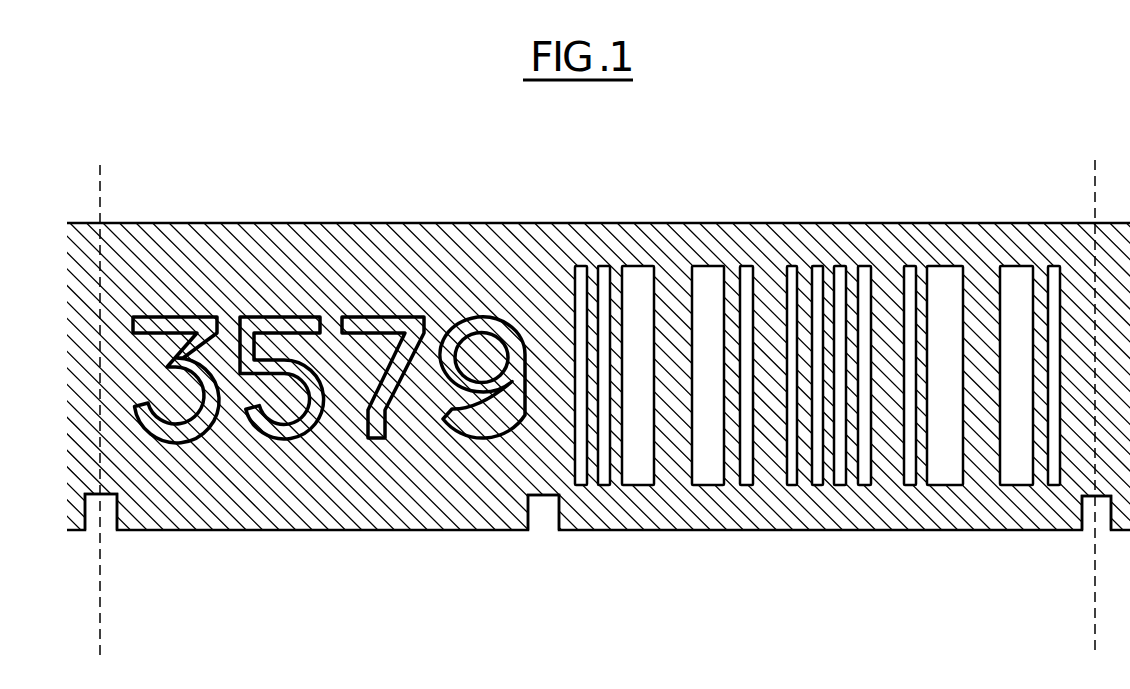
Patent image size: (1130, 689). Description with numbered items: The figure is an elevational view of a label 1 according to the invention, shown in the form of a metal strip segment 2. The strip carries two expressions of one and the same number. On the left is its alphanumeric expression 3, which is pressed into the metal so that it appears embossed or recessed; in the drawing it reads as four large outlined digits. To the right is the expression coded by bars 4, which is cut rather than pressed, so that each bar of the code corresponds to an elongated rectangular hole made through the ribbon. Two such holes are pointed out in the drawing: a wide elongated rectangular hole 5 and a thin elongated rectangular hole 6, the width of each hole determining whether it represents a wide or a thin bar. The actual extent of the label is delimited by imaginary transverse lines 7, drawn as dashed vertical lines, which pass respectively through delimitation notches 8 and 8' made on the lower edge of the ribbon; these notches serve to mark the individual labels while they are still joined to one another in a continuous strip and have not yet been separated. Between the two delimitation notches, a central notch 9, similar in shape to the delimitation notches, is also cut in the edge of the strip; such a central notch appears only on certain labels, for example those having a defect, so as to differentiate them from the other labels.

The label 1 is at (762, 183).
The metal strip segment 2 is at (80, 222).
The alphanumeric expression 3 is at (337, 470).
The expression coded by bars 4 is at (777, 505).
The wide elongated rectangular hole 5 is at (929, 282).
The thin elongated rectangular hole 6 is at (1053, 282).
The imaginary transverse line 7 is at (100, 625).
The delimitation notch 8 is at (107, 537).
The delimitation notch 8' is at (1074, 541).
The central notch 9 is at (557, 510).